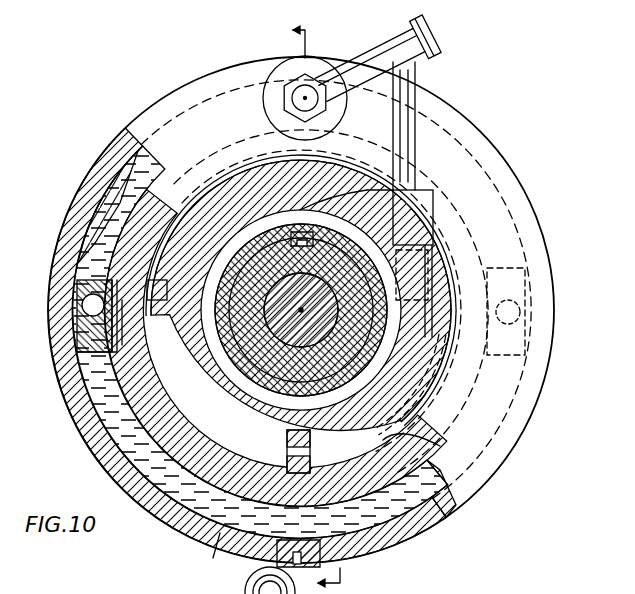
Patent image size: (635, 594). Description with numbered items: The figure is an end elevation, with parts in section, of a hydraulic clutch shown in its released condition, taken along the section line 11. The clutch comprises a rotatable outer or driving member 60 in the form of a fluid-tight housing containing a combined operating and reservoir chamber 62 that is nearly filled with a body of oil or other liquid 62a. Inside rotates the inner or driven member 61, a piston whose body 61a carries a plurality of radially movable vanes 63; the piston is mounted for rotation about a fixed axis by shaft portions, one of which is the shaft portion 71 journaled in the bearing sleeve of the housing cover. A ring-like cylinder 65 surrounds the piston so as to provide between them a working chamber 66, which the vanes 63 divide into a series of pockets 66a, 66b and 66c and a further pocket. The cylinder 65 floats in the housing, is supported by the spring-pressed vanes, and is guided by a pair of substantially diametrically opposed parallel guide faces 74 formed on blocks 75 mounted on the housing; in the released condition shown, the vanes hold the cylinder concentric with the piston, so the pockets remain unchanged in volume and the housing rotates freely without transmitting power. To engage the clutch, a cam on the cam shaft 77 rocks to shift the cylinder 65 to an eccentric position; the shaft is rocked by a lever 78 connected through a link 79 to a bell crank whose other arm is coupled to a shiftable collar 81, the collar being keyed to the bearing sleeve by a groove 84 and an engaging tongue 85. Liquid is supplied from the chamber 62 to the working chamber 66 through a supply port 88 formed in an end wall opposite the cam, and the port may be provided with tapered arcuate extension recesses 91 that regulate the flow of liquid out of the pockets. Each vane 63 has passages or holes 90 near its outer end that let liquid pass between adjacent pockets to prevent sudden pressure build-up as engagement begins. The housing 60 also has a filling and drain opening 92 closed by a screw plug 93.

The section line 11- 11 is at (314, 307).
The outer or driving member 60 is at (500, 448).
The inner or driven member 61 is at (160, 260).
The body of the piston 61a is at (165, 232).
The combined operating and reservoir chamber 62 is at (90, 404).
The liquid 62a is at (127, 453).
The vanes 63 is at (202, 554).
The cylinder member 65 is at (427, 440).
The working chamber 66 is at (188, 207).
The pocket 66a is at (207, 513).
The pocket 66b is at (160, 235).
The pocket 66c is at (438, 522).
The shaft portion 71 is at (373, 380).
The guide faces 74 is at (125, 352).
The blocks 75 is at (75, 300).
The cam shaft 77 is at (265, 106).
The lever 78 is at (385, 48).
The link 79 is at (410, 100).
The shiftable collar 81 is at (332, 235).
The groove 84 is at (280, 245).
The tongue 85 is at (295, 238).
The supply port 88 is at (388, 513).
The passages or holes 90 is at (95, 380).
The extension recesses 91 is at (452, 373).
The filling and drain opening 92 is at (327, 563).
The screw plug 93 is at (275, 555).